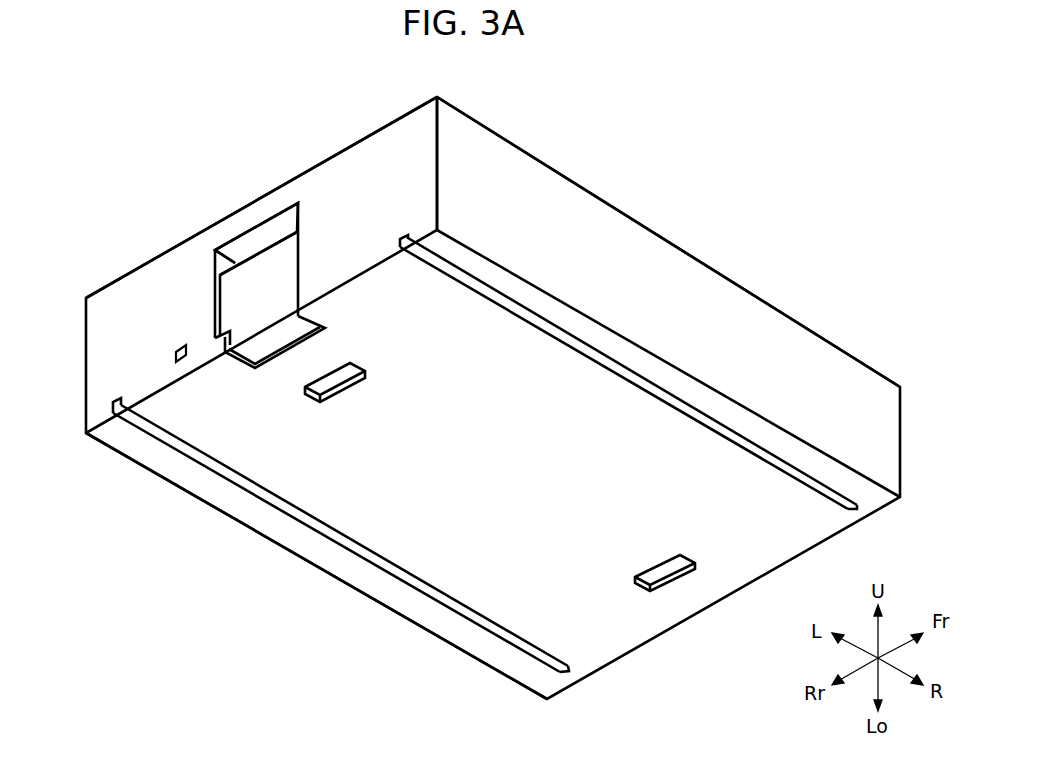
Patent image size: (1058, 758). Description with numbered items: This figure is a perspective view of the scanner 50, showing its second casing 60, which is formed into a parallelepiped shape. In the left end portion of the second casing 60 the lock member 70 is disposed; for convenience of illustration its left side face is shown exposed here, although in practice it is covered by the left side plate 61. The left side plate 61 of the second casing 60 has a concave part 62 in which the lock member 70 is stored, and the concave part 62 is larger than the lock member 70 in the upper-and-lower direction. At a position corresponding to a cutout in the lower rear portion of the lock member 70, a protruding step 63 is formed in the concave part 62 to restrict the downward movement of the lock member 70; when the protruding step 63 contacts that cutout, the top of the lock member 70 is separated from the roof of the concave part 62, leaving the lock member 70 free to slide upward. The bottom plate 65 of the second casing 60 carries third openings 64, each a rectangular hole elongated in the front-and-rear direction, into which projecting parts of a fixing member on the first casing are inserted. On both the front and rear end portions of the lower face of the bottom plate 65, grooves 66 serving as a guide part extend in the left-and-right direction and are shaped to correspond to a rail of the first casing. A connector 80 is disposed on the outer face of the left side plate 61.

The scanner 50 is at (118, 150).
The second casing 60 is at (211, 215).
The left side plate 61 is at (347, 175).
The concave part 62 is at (248, 243).
The protruding step 63 is at (220, 350).
The third openings 64 is at (305, 392).
The bottom plate 65 is at (192, 478).
The grooves 66 is at (590, 366).
The lock member 70 is at (277, 237).
The connector 80 is at (175, 353).